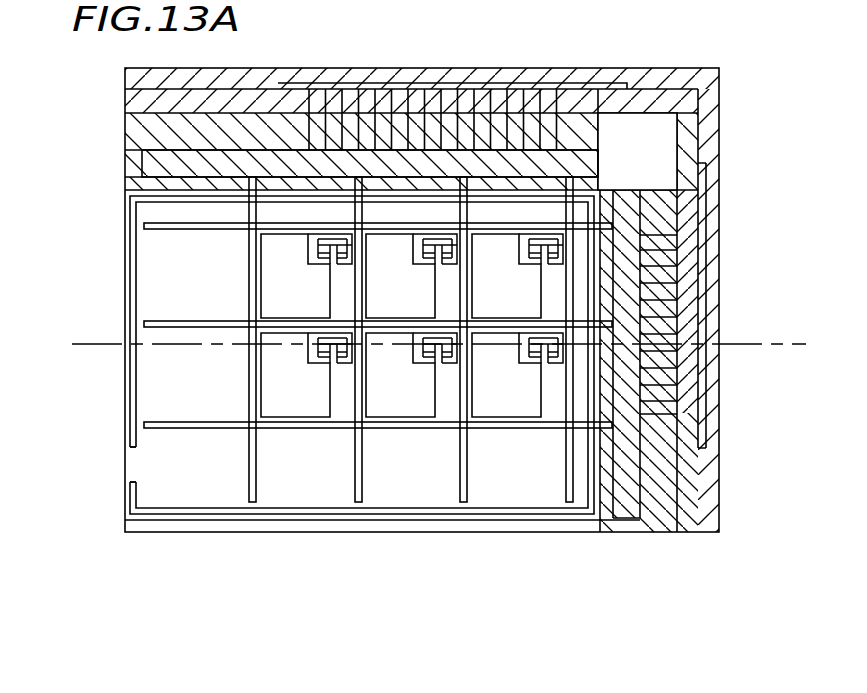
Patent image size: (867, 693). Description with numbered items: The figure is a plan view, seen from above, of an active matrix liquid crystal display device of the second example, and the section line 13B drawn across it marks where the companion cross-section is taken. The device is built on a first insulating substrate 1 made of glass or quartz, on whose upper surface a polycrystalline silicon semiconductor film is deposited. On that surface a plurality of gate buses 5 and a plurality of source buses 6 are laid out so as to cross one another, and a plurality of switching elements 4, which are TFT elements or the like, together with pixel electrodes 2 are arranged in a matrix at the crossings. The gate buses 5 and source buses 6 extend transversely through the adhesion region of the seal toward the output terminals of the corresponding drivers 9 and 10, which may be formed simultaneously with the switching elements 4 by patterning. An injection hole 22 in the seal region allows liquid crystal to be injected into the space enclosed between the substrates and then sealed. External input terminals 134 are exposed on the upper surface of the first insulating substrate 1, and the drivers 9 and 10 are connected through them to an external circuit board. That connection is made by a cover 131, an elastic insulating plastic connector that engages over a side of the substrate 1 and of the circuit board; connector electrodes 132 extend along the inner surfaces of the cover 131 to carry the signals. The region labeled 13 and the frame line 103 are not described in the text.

The first insulating substrate 1 is at (657, 130).
The pixel electrode 2 is at (297, 410).
The switching element 4 is at (452, 232).
The gate bus 5 is at (160, 318).
The source bus 6 is at (251, 493).
The driver 9 is at (616, 500).
The driver 10 is at (148, 166).
The common wiring 13 is at (668, 213).
The injection hole 22 is at (130, 468).
The common electrode line 103 is at (131, 236).
The cover 131 is at (710, 322).
The connector electrode 132 is at (577, 83).
The external input terminal 134 is at (697, 462).
The line 13B–13B' 13B is at (441, 345).